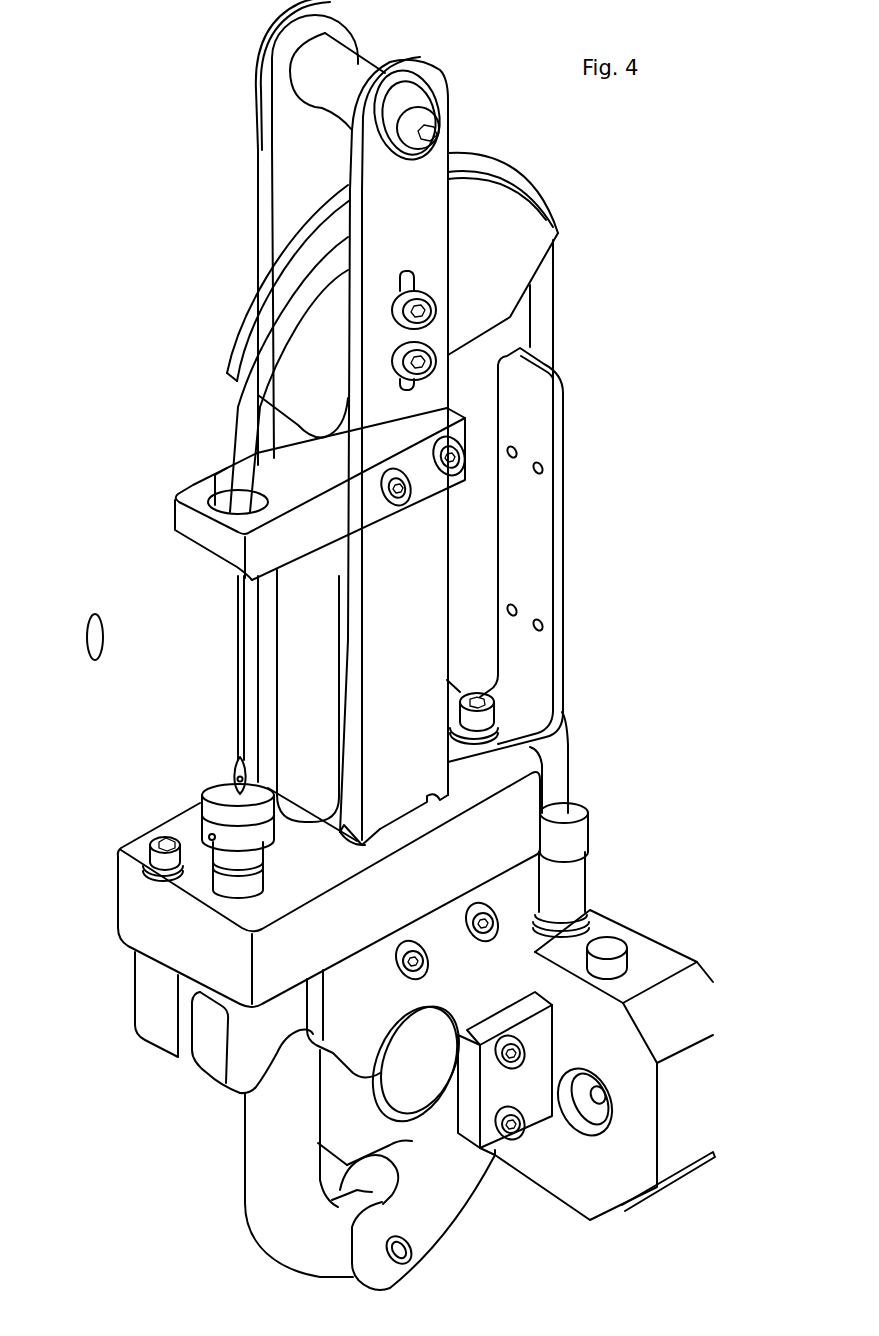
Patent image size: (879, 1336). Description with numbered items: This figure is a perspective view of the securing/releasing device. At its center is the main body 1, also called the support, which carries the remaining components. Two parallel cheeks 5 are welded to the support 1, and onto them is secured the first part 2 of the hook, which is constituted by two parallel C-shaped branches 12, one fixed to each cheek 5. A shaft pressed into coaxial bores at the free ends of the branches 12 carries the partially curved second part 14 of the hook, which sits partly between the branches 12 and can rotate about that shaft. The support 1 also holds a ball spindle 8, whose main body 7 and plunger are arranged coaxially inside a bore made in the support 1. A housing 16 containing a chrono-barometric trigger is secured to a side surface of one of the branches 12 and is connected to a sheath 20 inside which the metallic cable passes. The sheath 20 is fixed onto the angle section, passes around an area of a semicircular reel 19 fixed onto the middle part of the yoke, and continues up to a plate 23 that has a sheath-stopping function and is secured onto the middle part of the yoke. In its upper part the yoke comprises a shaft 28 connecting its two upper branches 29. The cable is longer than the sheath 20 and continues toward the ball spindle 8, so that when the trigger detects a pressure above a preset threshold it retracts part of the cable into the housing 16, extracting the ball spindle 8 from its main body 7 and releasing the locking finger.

The main body 1 is at (329, 914).
The first part of the hook 2 is at (430, 1243).
The cheeks 5 is at (405, 1016).
The main body of the ball spindle 7 is at (264, 873).
The ball spindle 8 is at (253, 838).
The C-shaped branches 12 is at (377, 1178).
The second part of the hook 14 is at (258, 1186).
The housing 16 is at (586, 1065).
The semicircular reel 19 is at (233, 349).
The sheath 20 is at (565, 755).
The plate 23 is at (178, 527).
The shaft 28 is at (350, 62).
The upper branches 29 is at (447, 98).